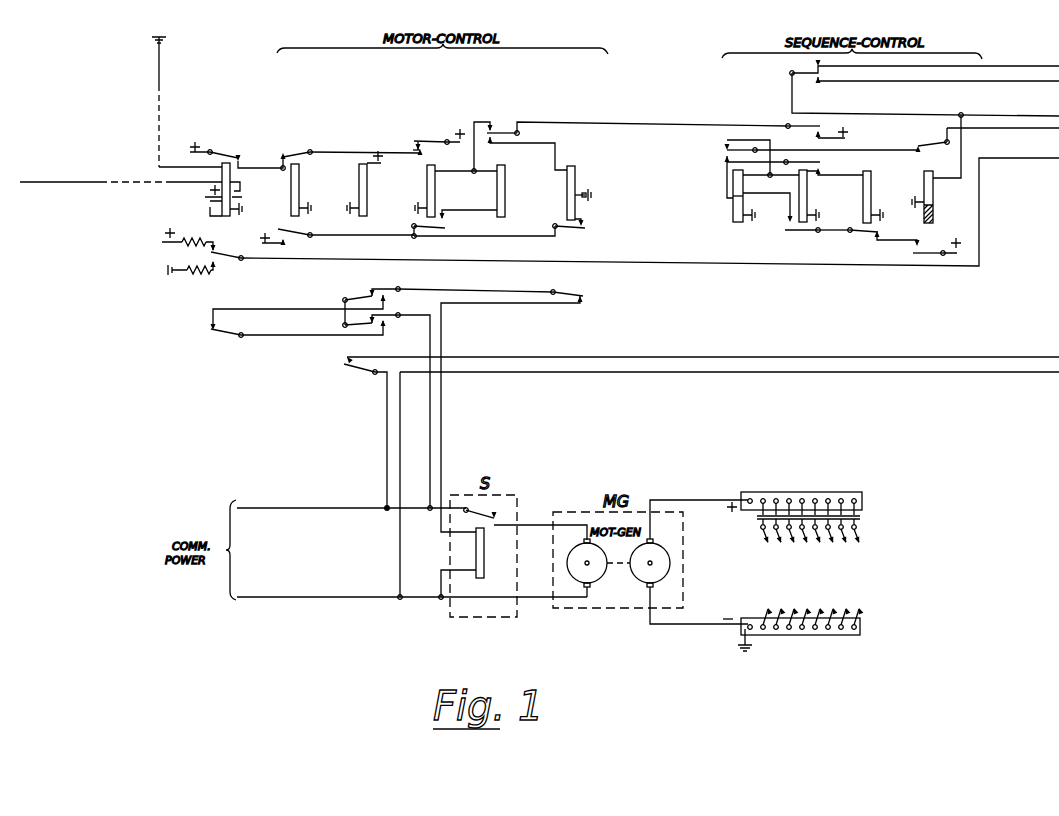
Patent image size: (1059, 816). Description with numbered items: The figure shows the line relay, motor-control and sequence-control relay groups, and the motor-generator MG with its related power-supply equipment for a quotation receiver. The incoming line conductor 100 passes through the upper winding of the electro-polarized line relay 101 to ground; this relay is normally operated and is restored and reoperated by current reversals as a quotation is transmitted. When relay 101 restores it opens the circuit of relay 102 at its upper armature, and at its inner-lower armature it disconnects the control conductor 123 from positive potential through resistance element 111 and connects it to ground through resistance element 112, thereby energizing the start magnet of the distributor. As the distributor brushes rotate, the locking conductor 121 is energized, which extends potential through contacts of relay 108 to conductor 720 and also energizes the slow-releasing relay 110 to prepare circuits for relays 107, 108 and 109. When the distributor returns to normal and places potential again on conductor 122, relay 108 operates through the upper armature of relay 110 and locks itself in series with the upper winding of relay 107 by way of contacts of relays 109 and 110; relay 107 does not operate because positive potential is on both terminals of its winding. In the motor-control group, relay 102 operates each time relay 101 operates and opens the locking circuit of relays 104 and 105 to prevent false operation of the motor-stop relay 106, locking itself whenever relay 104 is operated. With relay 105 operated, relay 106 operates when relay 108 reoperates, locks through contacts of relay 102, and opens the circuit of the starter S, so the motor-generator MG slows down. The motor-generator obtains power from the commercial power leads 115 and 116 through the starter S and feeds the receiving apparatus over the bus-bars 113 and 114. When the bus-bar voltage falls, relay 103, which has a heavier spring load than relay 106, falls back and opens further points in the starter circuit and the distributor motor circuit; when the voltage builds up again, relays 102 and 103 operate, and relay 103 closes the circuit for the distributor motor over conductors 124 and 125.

The incoming line conductor 100 is at (55, 181).
The electro-polarized line relay 101 is at (238, 197).
The motor-control relay 102 is at (299, 188).
The motor-control relay 103 is at (367, 189).
The motor-control relay 104 is at (435, 189).
The motor-control relay 105 is at (505, 189).
The motor-stop relay 106 is at (575, 183).
The sequence relay 107 is at (733, 209).
The sequence relay 108 is at (807, 194).
The sequence relay 109 is at (871, 194).
The slow-releasing relay 110 is at (933, 198).
The resistance element 111 is at (200, 236).
The resistance element 112 is at (204, 287).
The bus-bar 113 is at (810, 494).
The bus-bar 114 is at (810, 637).
The commercial power lead 115 is at (279, 505).
The commercial power lead 116 is at (279, 595).
The locking conductor 121 is at (1048, 116).
The conductor 122 is at (1044, 130).
The control conductor 123 is at (300, 262).
The conductor 124 is at (1038, 357).
The conductor 125 is at (1035, 380).
The conductor 720 is at (1043, 68).